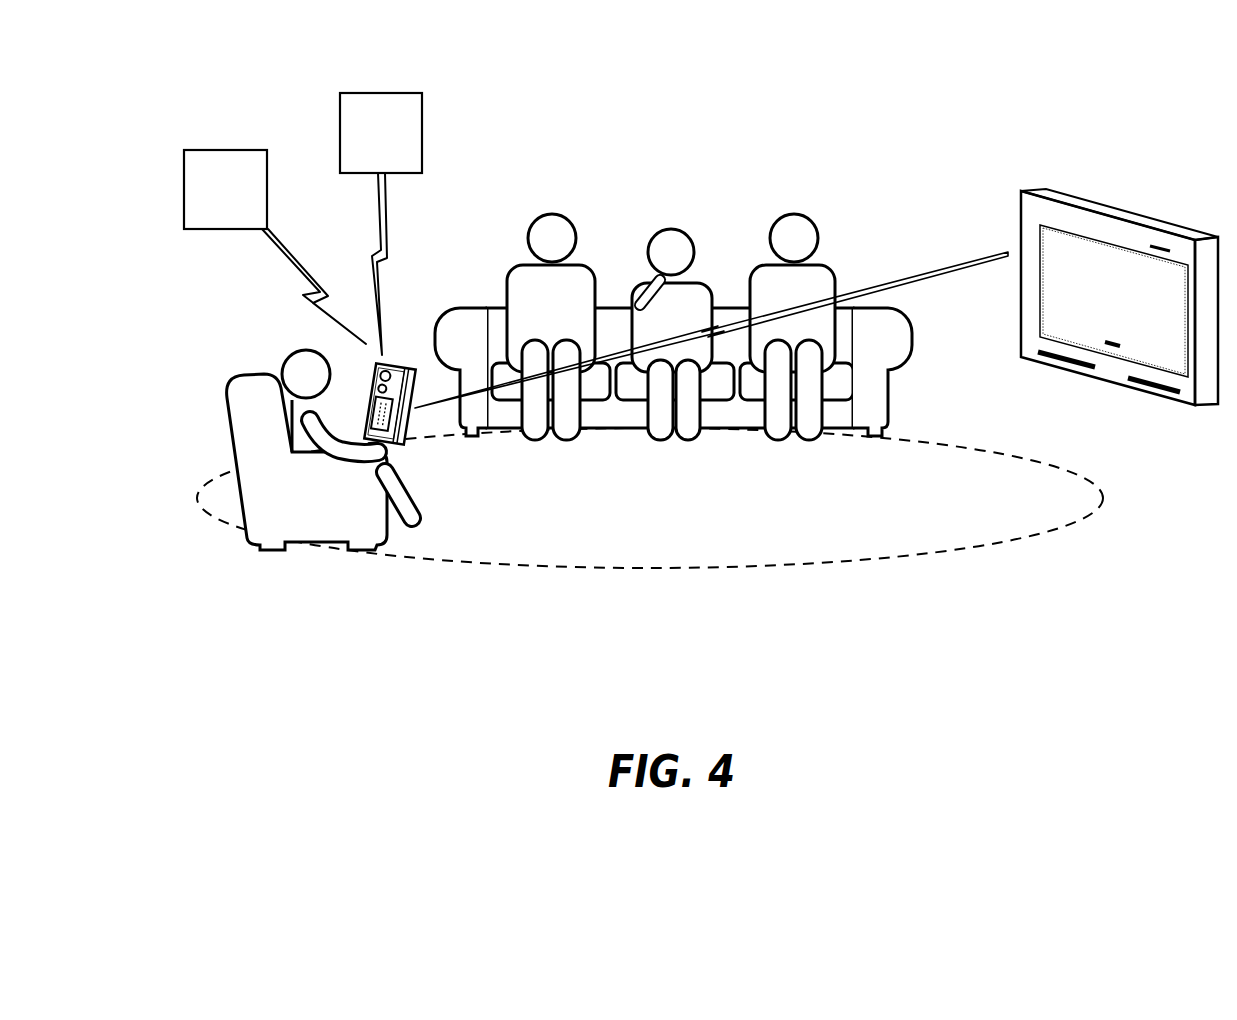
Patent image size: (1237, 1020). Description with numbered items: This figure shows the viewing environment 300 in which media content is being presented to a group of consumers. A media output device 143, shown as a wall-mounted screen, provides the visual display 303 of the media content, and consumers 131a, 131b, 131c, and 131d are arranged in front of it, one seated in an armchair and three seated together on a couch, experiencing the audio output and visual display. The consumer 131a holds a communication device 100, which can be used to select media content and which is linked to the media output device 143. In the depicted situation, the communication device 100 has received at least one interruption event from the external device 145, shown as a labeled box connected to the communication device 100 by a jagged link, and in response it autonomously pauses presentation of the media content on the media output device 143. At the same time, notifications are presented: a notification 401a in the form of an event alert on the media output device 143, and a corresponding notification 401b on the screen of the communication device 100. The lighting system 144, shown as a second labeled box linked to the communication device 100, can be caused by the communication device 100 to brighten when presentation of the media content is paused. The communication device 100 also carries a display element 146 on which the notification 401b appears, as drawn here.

The viewing environment 300 is at (258, 311).
The external device 145 is at (210, 221).
The lighting system 144 is at (366, 163).
The consumer 131a is at (418, 533).
The consumer 131b is at (509, 280).
The consumer 131c is at (635, 312).
The consumer 131d is at (750, 283).
The communication device 100 is at (437, 384).
The user device display 146 is at (392, 425).
The notification 401b is at (393, 405).
The visual display 303 is at (1080, 244).
The media output device 143 is at (1195, 237).
The notification 401a is at (1118, 258).